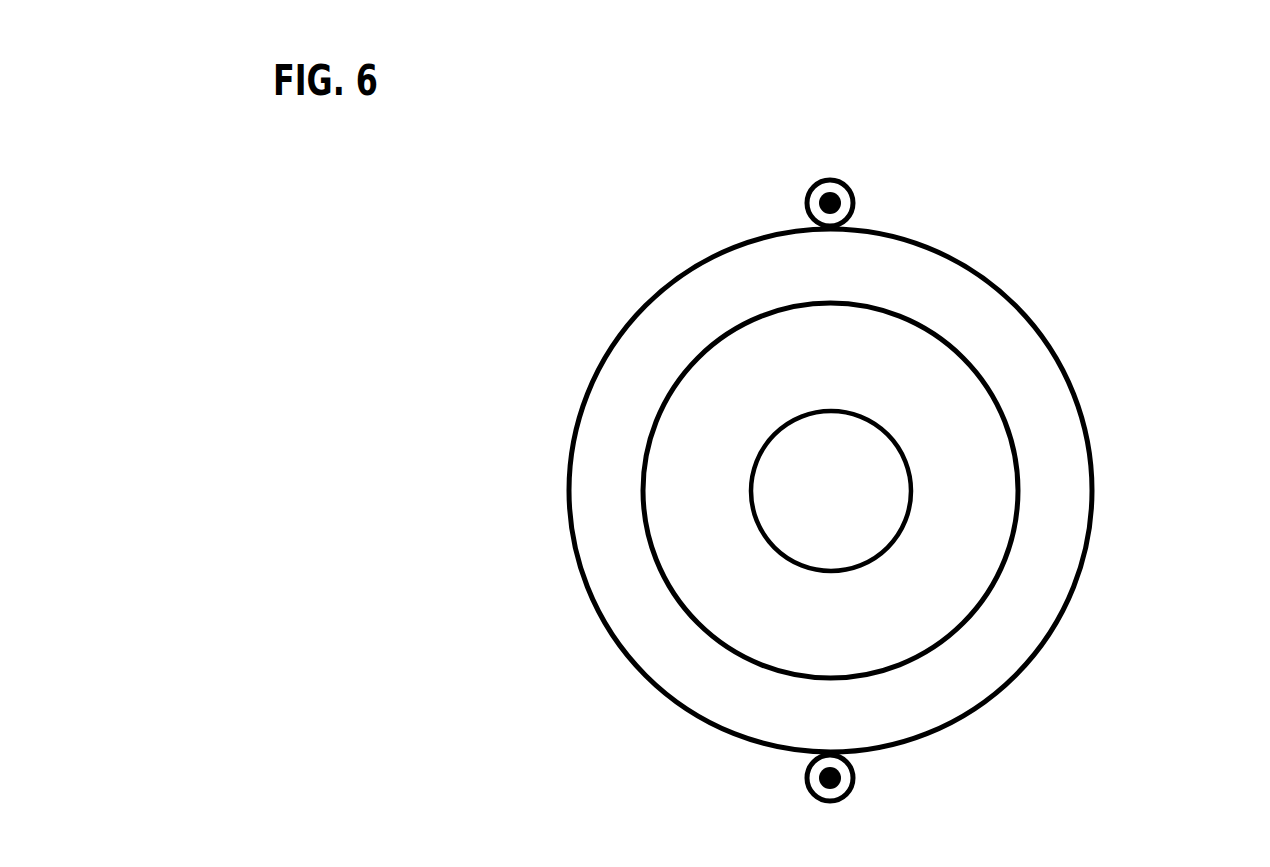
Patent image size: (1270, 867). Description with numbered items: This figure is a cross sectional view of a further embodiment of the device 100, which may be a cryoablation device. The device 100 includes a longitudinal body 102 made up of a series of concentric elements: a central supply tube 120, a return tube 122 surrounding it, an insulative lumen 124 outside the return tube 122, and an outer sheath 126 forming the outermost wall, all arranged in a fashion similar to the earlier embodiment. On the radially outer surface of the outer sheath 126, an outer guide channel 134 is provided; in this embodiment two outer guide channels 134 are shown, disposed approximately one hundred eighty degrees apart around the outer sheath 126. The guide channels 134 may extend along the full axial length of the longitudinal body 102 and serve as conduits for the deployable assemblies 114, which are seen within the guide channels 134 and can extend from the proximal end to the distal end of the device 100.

The device 100 is at (553, 604).
The longitudinal body 102 is at (1072, 634).
The deployable assemblies 114 is at (833, 197).
The supply tube 120 is at (851, 502).
The return tube 122 is at (988, 540).
The insulative lumen 124 is at (1062, 578).
The outer sheath 126 is at (1060, 353).
The outer guide channel 134 is at (795, 204).